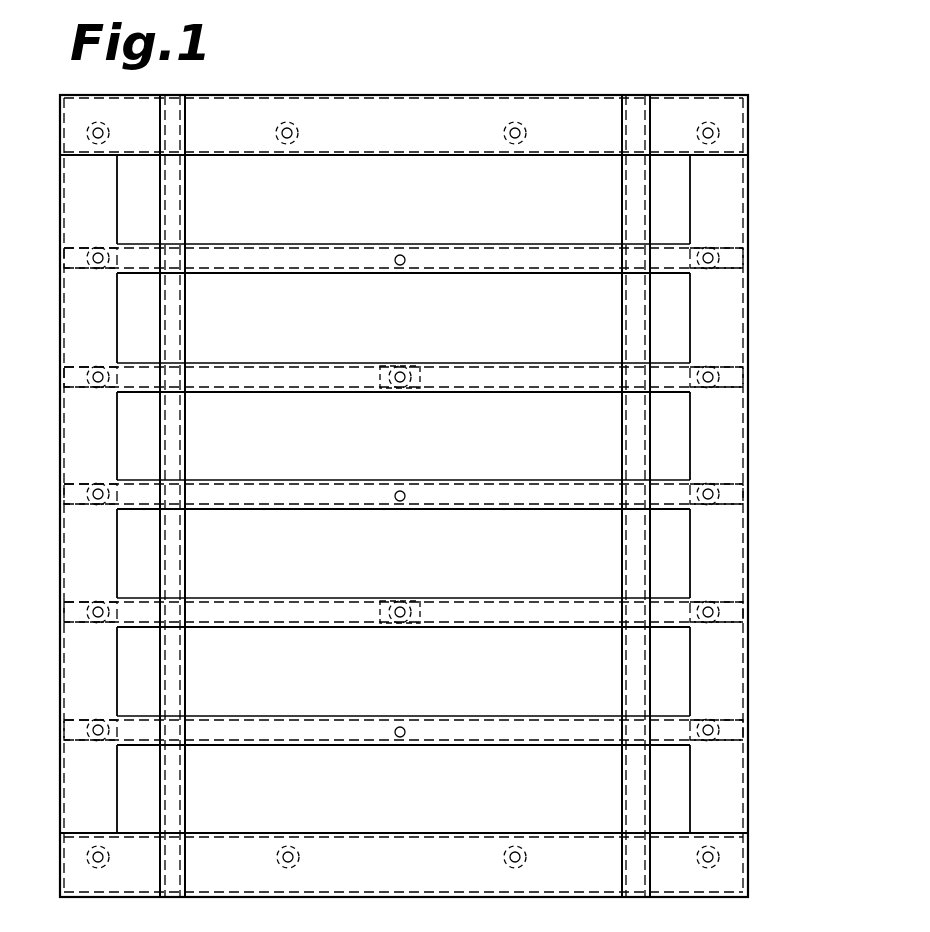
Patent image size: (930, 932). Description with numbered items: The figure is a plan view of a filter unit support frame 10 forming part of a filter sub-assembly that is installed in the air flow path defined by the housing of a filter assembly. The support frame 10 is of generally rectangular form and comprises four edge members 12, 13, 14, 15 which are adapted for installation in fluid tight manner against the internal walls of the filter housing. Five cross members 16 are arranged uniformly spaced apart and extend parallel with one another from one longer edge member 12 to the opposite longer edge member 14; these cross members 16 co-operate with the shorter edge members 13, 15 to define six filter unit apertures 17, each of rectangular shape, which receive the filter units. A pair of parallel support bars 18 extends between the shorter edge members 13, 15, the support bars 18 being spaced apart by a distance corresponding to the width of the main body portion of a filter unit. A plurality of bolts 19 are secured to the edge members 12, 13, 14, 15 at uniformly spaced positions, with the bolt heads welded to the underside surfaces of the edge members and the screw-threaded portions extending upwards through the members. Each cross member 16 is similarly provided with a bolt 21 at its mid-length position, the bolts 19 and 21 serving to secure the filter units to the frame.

The support frame 10 is at (765, 83).
The edge member 12 is at (715, 437).
The edge member 13 is at (250, 110).
The edge member 14 is at (68, 427).
The edge member 15 is at (373, 860).
The cross member 16 is at (258, 483).
The filter unit aperture 17 is at (511, 222).
The support bar 18 is at (168, 805).
The bolt 19 is at (290, 128).
The bolt 21 is at (400, 262).